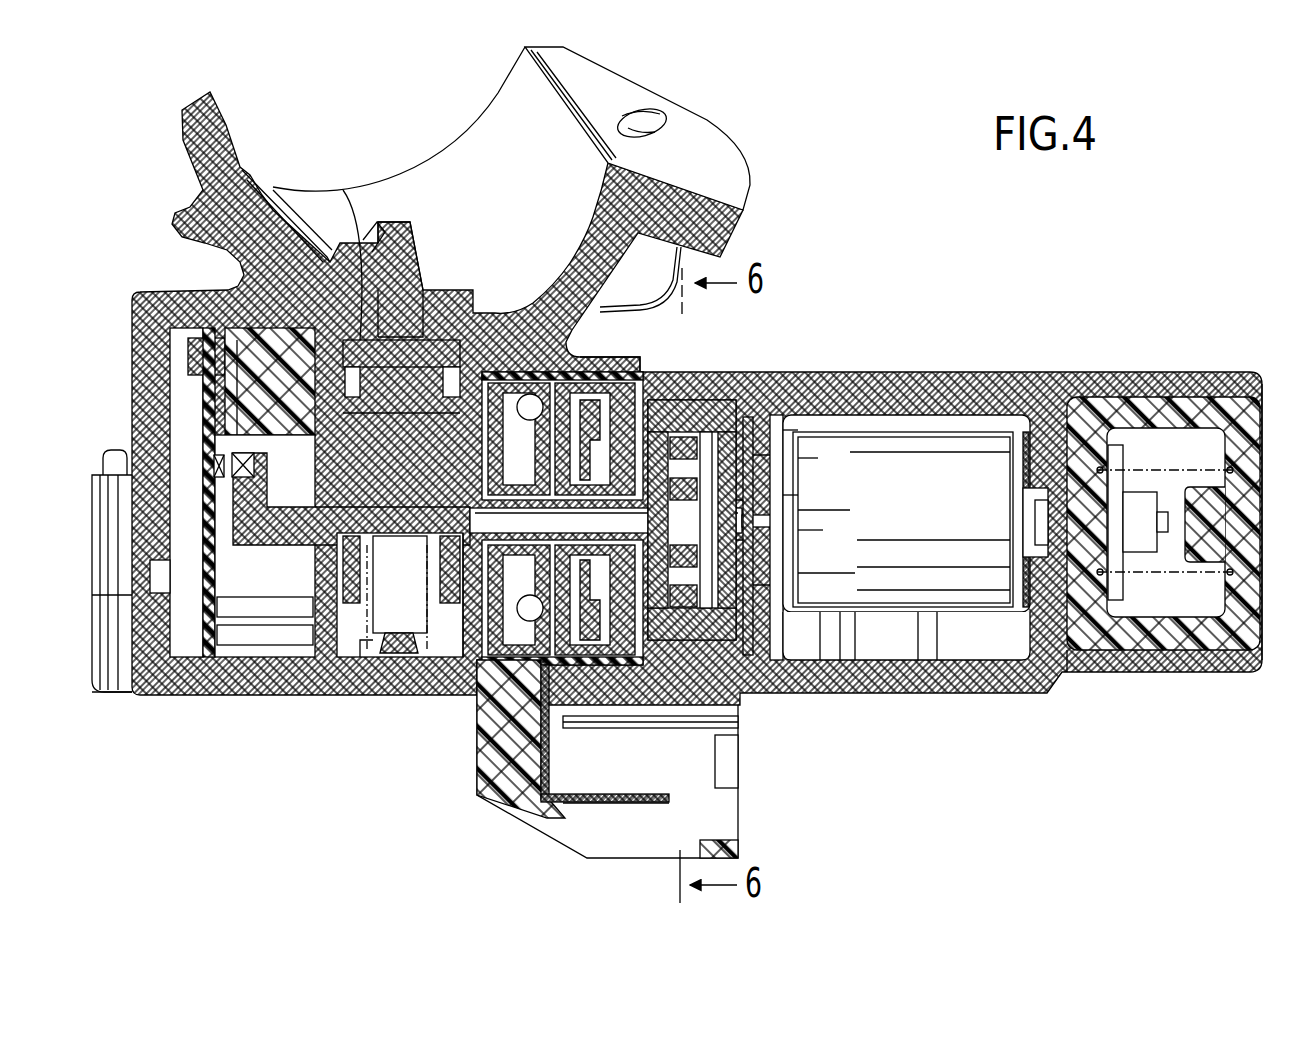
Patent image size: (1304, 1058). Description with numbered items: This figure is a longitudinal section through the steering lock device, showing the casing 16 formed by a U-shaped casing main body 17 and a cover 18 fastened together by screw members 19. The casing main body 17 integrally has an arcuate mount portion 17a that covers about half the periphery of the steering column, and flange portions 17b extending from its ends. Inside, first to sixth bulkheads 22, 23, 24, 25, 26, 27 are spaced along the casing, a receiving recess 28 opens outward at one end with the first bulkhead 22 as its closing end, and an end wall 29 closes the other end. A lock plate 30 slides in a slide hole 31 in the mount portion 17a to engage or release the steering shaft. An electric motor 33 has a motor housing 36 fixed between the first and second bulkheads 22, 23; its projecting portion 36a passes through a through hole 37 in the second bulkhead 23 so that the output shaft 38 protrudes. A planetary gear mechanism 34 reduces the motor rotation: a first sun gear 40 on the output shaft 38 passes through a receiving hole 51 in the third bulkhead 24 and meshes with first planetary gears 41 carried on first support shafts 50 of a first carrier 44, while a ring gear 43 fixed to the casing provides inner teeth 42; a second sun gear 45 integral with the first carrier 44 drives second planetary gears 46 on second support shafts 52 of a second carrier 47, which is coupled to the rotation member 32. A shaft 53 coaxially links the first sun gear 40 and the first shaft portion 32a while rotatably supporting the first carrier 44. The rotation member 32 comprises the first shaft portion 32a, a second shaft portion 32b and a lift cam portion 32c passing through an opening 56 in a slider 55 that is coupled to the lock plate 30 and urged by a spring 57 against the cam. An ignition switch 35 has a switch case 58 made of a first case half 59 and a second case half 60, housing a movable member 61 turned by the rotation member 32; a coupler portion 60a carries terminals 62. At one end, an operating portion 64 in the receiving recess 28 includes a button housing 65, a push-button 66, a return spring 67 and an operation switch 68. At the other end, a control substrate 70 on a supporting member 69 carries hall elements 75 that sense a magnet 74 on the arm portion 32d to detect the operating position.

The casing 16 is at (165, 734).
The casing main body 17 is at (93, 567).
The mount portion 17a is at (378, 190).
The flange portions 17b is at (720, 152).
The cover 18 is at (118, 665).
The screw members 19 is at (113, 453).
The first bulkhead 22 is at (1023, 460).
The second bulkhead 23 is at (783, 495).
The third bulkhead 24 is at (772, 420).
The fourth bulkhead 25 is at (613, 705).
The fifth bulkhead 26 is at (460, 630).
The sixth bulkhead 27 is at (313, 617).
The receiving recess 28 is at (1157, 643).
The end wall 29 is at (145, 368).
The lock plate 30 is at (400, 232).
The slide hole 31 is at (400, 283).
The rotation member 32 is at (407, 533).
The first shaft portion 32a is at (790, 470).
The second shaft portion 32b is at (278, 520).
The lift cam portion 32c is at (377, 467).
The arm portion 32d is at (213, 423).
The electric motor 33 is at (915, 422).
The planetary gear mechanism 34 is at (738, 742).
The ignition switch 35 is at (597, 352).
The motor housing 36 is at (985, 437).
The projecting portion 36a is at (783, 548).
The through hole 37 is at (783, 520).
The output shaft 38 is at (783, 477).
The first sun gear 40 is at (783, 530).
The first planetary gears 41 is at (735, 400).
The inner teeth 42 is at (652, 362).
The ring gear 43 is at (703, 400).
The first carrier 44 is at (760, 660).
The second sun gear 45 is at (770, 625).
The second planetary gears 46 is at (682, 437).
The second carrier 47 is at (670, 680).
The first support shafts 50 is at (748, 455).
The receiving hole 51 is at (783, 573).
The second support shafts 52 is at (755, 430).
The shaft 53 is at (470, 500).
The slider 55 is at (303, 205).
The opening 56 is at (323, 517).
The spring 57 is at (367, 670).
The switch case 58 is at (570, 197).
The first case half 59 is at (580, 375).
The second case half 60 is at (505, 375).
The coupler portion 60a is at (520, 808).
The movable member 61 is at (480, 727).
The terminals 62 is at (620, 803).
The operating portion 64 is at (1267, 400).
The button housing 65 is at (1150, 400).
The push-button 66 is at (1250, 505).
The return spring 67 is at (1227, 572).
The operation switch 68 is at (1140, 505).
The supporting member 69 is at (237, 340).
The control substrate 70 is at (203, 353).
The magnet 74 is at (254, 466).
The hall element 75 is at (207, 460).